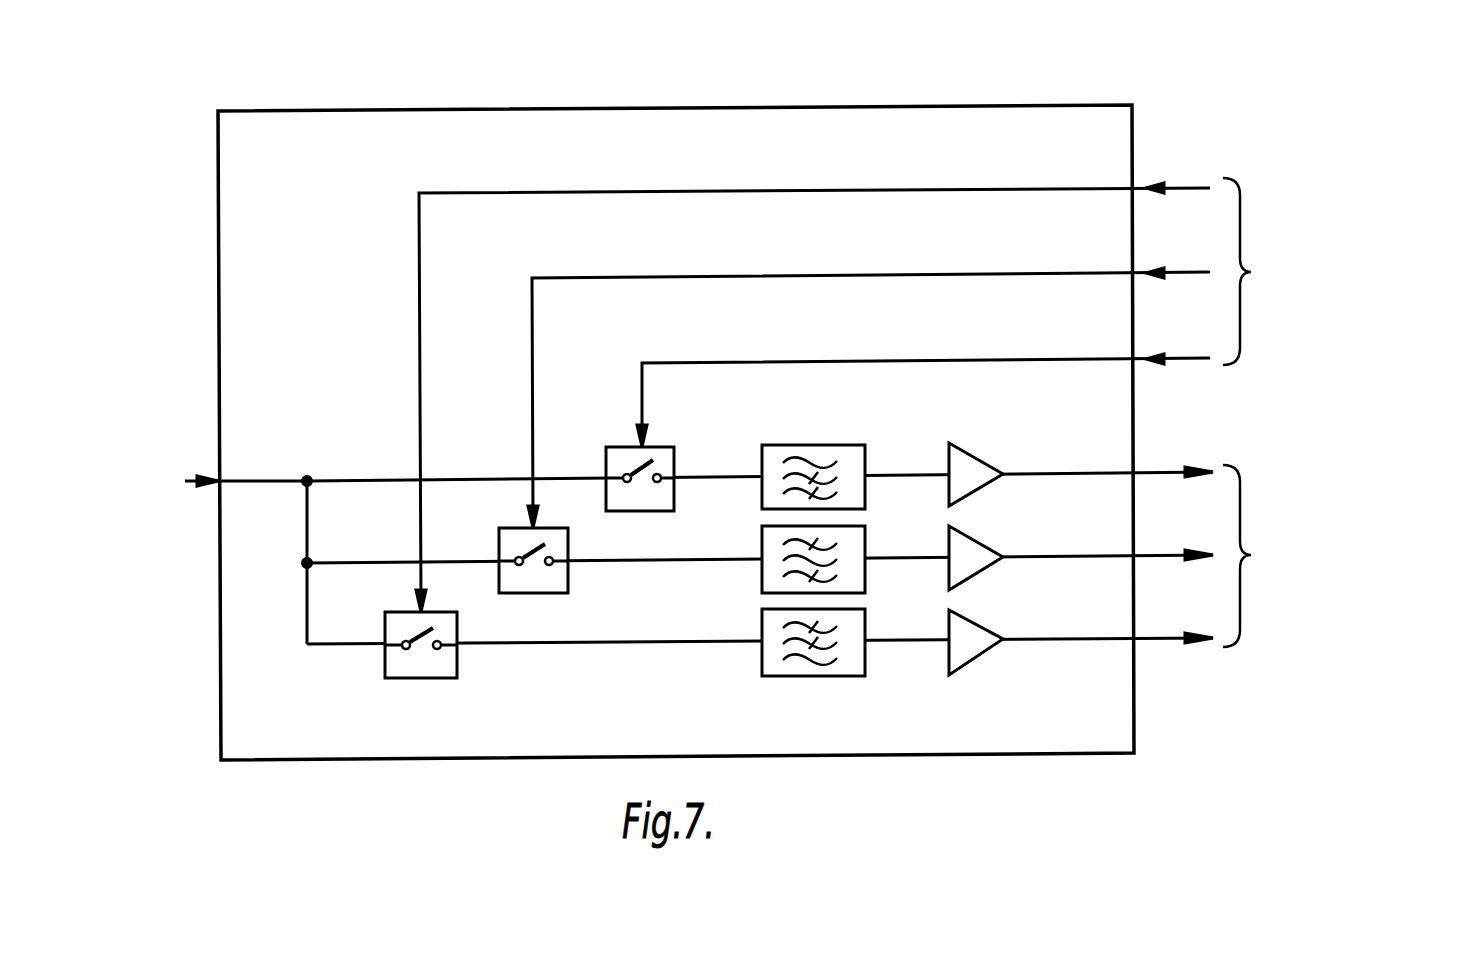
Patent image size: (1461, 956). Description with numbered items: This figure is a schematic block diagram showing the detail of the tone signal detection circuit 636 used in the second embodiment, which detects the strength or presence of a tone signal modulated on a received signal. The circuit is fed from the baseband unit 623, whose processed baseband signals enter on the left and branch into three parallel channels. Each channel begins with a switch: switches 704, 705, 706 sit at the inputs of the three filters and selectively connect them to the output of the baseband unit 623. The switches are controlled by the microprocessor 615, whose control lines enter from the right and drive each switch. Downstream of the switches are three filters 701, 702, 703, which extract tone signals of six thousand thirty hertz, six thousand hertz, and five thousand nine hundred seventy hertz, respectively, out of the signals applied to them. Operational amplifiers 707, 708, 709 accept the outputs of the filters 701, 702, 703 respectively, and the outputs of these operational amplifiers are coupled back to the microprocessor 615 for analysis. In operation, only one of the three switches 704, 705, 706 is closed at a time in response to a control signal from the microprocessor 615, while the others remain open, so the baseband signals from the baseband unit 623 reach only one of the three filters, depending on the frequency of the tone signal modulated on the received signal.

The tone signal detection circuit 636 is at (957, 106).
The baseband unit 623 is at (185, 471).
The microprocessor 615 is at (1334, 412).
The filter 701 is at (758, 497).
The filter 702 is at (758, 582).
The filter 703 is at (783, 671).
The switch 704 is at (699, 432).
The switch 705 is at (559, 583).
The switch 706 is at (452, 655).
The operational amplifier 707 is at (973, 485).
The operational amplifier 708 is at (973, 569).
The operational amplifier 709 is at (968, 659).